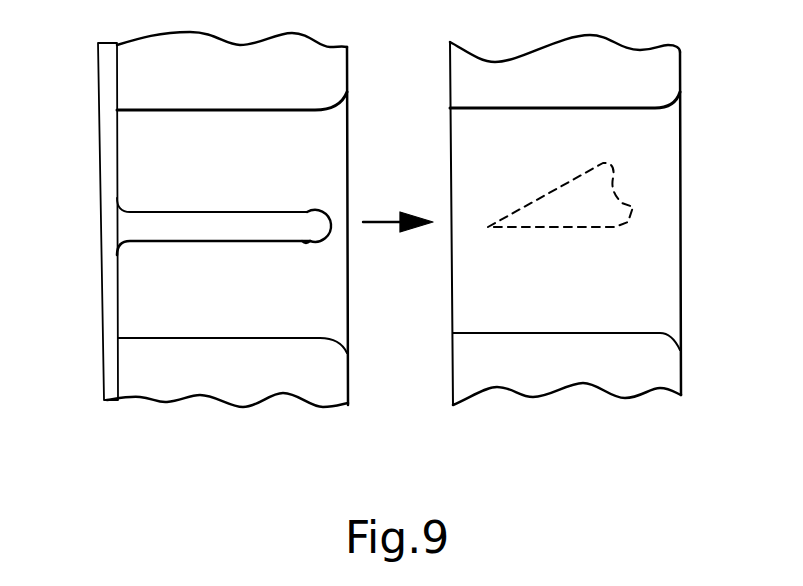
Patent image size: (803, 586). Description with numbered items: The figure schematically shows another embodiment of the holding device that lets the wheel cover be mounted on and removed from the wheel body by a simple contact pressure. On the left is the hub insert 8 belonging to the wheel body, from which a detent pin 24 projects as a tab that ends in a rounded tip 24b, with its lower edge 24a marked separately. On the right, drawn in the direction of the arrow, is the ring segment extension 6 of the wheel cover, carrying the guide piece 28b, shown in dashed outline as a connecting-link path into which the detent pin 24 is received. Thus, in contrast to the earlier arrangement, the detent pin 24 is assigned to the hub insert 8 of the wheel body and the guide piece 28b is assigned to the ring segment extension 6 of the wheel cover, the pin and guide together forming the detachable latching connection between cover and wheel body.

The hub insert 8 is at (98, 125).
The detent pin 24 is at (202, 212).
The tab lower edge 24a is at (303, 256).
The tab tip 24b is at (322, 208).
The ring segment extension 6 is at (680, 122).
The guide piece 28b is at (628, 222).